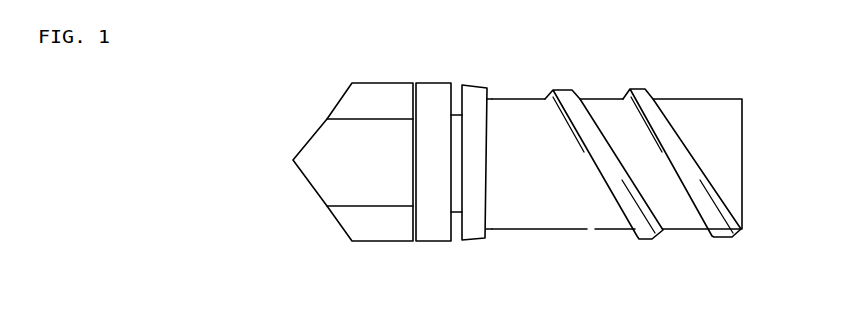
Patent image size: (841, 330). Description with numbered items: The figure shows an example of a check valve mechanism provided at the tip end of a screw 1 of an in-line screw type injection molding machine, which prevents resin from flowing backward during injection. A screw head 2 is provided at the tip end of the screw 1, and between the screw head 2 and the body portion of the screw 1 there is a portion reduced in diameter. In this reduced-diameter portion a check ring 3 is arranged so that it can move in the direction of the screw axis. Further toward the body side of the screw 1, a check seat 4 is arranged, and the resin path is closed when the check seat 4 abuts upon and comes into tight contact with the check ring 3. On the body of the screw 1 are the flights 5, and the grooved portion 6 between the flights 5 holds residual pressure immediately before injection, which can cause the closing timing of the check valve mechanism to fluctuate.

The screw 1 is at (698, 102).
The screw head 2 is at (368, 96).
The check ring 3 is at (430, 234).
The check seat 4 is at (481, 234).
The flights 5 is at (716, 226).
The grooved portion 6 is at (604, 222).